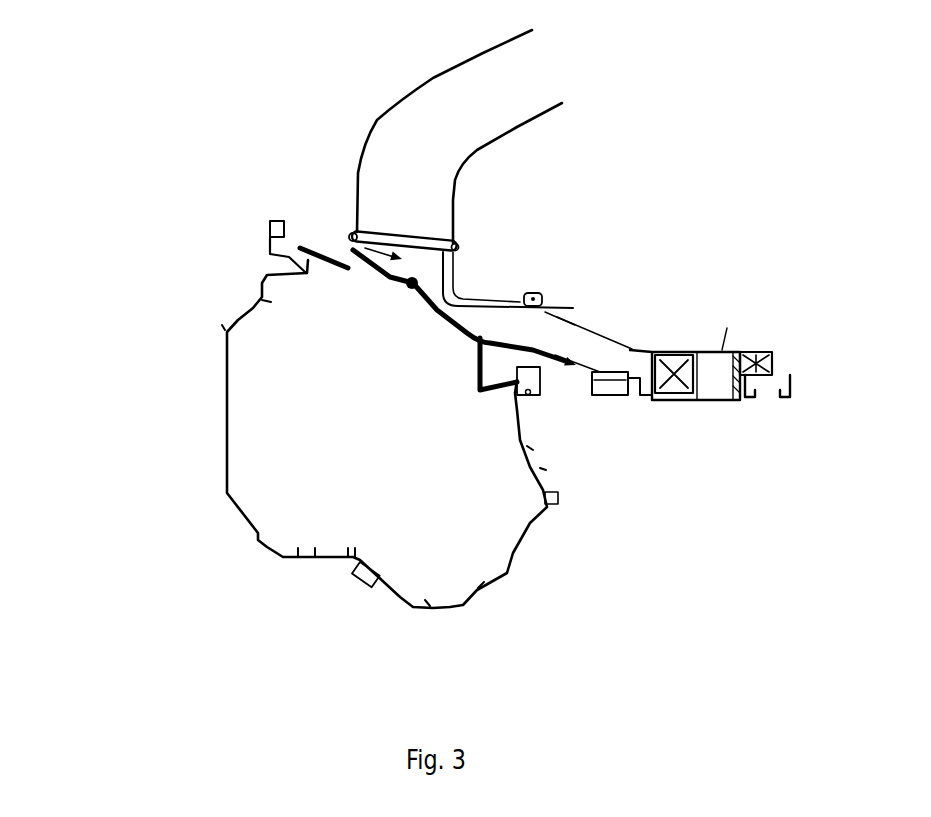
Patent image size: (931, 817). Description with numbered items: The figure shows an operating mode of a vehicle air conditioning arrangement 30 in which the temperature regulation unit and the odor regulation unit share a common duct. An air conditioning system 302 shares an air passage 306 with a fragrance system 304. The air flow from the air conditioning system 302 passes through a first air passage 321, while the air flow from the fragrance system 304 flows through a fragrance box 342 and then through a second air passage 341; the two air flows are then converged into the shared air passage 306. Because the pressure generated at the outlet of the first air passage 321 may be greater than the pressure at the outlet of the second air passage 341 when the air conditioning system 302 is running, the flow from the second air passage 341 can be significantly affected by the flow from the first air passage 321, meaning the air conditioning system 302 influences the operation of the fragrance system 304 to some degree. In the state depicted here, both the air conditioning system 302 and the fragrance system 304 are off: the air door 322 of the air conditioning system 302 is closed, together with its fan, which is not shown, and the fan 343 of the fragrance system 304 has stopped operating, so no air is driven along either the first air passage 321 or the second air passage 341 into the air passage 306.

The surgical instrument assembly 30 is at (504, 716).
The air conditioning system 302 is at (249, 451).
The fragrance system 304 is at (711, 406).
The air passage 306 is at (421, 120).
The first air passage 321 is at (347, 237).
The air door 322 is at (373, 281).
The second air passage 341 is at (475, 305).
The fragrance box 342 is at (687, 352).
The fan 343 is at (768, 392).